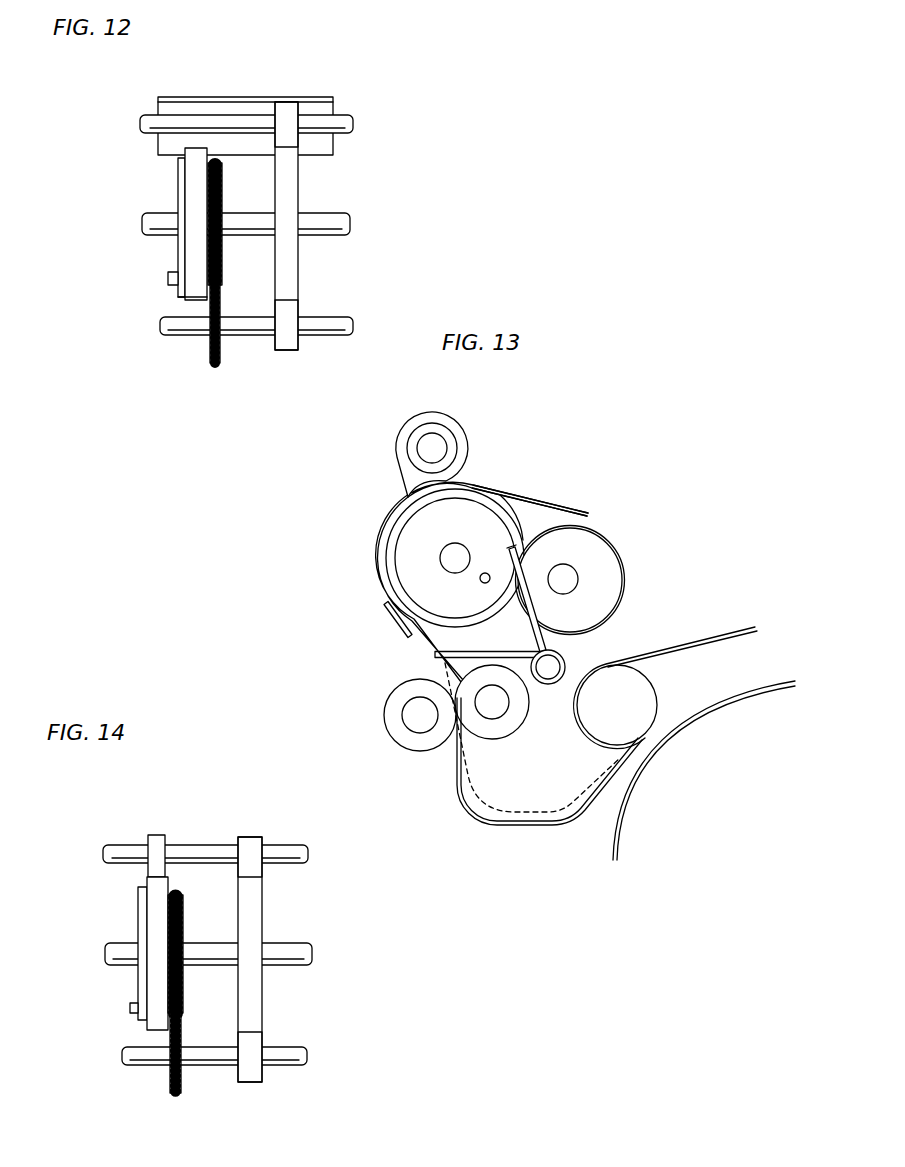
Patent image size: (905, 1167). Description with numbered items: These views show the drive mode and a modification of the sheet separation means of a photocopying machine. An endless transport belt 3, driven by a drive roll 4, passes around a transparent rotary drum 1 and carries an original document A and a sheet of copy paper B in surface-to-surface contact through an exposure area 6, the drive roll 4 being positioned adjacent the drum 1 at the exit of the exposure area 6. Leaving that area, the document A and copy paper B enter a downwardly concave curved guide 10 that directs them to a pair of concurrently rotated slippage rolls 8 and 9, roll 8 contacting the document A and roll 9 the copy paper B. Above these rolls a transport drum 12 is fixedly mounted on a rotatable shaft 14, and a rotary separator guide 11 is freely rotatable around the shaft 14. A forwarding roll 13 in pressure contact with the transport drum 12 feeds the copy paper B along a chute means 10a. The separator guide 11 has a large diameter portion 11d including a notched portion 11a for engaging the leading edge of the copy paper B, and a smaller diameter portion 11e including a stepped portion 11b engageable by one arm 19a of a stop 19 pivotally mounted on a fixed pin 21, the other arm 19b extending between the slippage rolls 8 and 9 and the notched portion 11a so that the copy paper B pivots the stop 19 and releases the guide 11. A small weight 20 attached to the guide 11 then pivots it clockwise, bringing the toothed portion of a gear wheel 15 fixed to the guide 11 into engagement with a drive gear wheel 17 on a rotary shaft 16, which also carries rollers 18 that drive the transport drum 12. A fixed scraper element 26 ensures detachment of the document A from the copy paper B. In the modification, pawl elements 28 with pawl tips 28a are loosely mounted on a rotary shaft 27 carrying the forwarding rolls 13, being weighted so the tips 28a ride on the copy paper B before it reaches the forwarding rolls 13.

In FIG. 13, the transparent rotary drum 1 is at (747, 690).
In FIG. 13, the endless transport belt 3 is at (728, 632).
In FIG. 13, the drive roll 4 is at (643, 730).
In FIG. 13, the exposure area 6 is at (725, 682).
In FIG. 13, the slippage roll 8 is at (427, 737).
In FIG. 13, the slippage roll 9 is at (502, 727).
In FIG. 13, the curved guide 10 is at (548, 827).
In FIG. 13, the chute means 10a is at (500, 498).
In FIG. 12, the rotary separator guide 11 is at (197, 243).
In FIG. 13, the rotary separator guide 11 is at (375, 567).
In FIG. 14, the rotary separator guide 11 is at (153, 980).
In FIG. 13, the notched portion 11a is at (386, 607).
In FIG. 13, the stepped portion 11b is at (547, 533).
In FIG. 12, the large diameter portion 11d is at (183, 297).
In FIG. 12, the smaller diameter portion 11e is at (178, 170).
In FIG. 12, the transport drum 12 is at (287, 197).
In FIG. 14, the transport drum 12 is at (252, 980).
In FIG. 12, the forwarding roll 13 is at (288, 110).
In FIG. 13, the forwarding roll 13 is at (452, 425).
In FIG. 14, the forwarding roll 13 is at (250, 843).
In FIG. 12, the rotatable shaft 14 is at (347, 215).
In FIG. 13, the rotatable shaft 14 is at (462, 552).
In FIG. 14, the rotatable shaft 14 is at (292, 947).
In FIG. 12, the gear wheel 15 is at (212, 203).
In FIG. 14, the gear wheel 15 is at (178, 927).
In FIG. 12, the rotary shaft 16 is at (335, 318).
In FIG. 13, the rotary shaft 16 is at (568, 576).
In FIG. 14, the rotary shaft 16 is at (212, 1057).
In FIG. 12, the drive gear wheel 17 is at (213, 343).
In FIG. 13, the drive gear wheel 17 is at (588, 537).
In FIG. 14, the drive gear wheel 17 is at (173, 1072).
In FIG. 12, the rollers 18 is at (283, 328).
In FIG. 14, the rollers 18 is at (250, 1073).
In FIG. 13, the stop 19 is at (535, 612).
In FIG. 13, the stop arm 19a is at (522, 551).
In FIG. 13, the stop arm 19b is at (440, 654).
In FIG. 12, the small weight 20 is at (168, 278).
In FIG. 13, the small weight 20 is at (480, 579).
In FIG. 14, the small weight 20 is at (130, 1010).
In FIG. 13, the fixed pin 21 is at (555, 665).
In FIG. 12, the scraper element 26 is at (203, 97).
In FIG. 12, the rotary shaft 27 is at (342, 120).
In FIG. 13, the rotary shaft 27 is at (442, 448).
In FIG. 14, the rotary shaft 27 is at (205, 853).
In FIG. 13, the pawl element 28 is at (400, 453).
In FIG. 14, the pawl element 28 is at (158, 840).
In FIG. 13, the pawl tip 28a is at (404, 496).
In FIG. 13, the original document A is at (513, 812).
In FIG. 13, the copy paper B is at (543, 813).